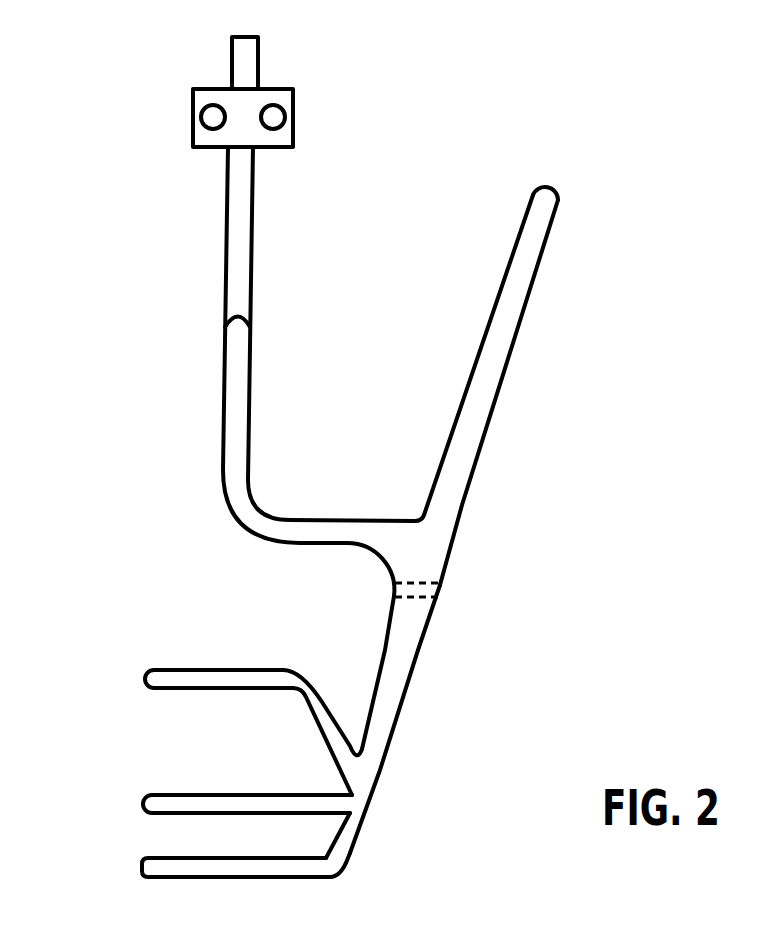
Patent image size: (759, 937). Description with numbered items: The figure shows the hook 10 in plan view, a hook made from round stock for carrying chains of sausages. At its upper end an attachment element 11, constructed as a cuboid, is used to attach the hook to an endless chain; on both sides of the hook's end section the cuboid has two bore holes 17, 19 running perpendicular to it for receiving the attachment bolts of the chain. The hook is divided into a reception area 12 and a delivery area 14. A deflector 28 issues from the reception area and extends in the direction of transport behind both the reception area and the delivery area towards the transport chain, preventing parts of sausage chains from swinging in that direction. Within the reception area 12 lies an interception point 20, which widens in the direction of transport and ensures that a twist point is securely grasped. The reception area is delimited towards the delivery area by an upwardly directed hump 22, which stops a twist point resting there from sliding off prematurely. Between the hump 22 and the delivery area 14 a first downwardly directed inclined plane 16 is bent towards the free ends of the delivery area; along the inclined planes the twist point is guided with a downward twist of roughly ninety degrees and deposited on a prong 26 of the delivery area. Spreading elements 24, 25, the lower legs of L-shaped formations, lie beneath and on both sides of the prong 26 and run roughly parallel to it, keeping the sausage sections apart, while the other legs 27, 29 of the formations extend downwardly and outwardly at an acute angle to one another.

The hook 10 is at (158, 331).
The attachment element 11 is at (278, 138).
The reception area 12 is at (500, 582).
The delivery area 14 is at (446, 803).
The first inclined plane 16 is at (405, 640).
The bore hole 17 is at (210, 117).
The bore hole 19 is at (273, 115).
The interception point 20 is at (402, 553).
The hump 22 is at (405, 593).
The spreading element 24 is at (193, 678).
The spreading element 25 is at (155, 865).
The prong 26 is at (202, 802).
The leg 27 is at (343, 842).
The deflector 28 is at (507, 315).
The leg 29 is at (325, 720).